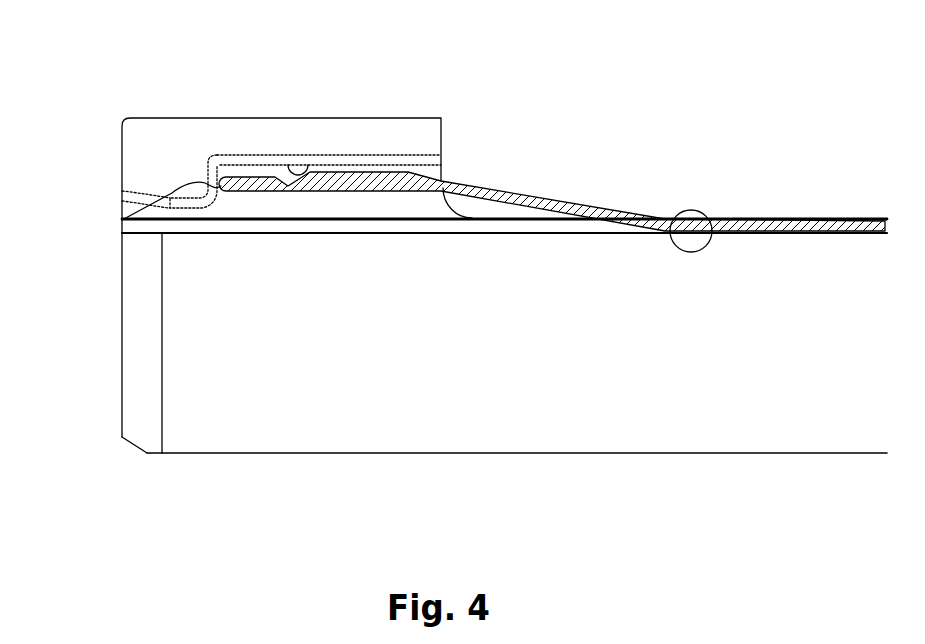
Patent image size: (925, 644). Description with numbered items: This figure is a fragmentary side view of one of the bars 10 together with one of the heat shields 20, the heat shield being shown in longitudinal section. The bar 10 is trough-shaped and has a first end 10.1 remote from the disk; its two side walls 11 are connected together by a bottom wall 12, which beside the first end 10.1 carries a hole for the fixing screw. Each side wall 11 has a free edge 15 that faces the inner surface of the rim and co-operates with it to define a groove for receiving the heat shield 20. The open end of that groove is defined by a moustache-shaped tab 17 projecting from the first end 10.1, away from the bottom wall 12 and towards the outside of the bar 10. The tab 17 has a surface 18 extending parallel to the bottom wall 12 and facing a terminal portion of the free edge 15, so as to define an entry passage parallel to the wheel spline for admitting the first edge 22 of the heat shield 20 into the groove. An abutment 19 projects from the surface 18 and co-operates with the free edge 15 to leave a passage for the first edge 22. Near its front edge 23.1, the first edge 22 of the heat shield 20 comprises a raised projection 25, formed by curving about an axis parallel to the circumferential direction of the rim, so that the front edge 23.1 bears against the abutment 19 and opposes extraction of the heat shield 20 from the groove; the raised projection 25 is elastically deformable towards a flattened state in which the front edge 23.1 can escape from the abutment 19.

The bar 10 is at (150, 94).
The first end 10.1 is at (122, 388).
The side wall 11 is at (257, 420).
The bottom wall 12 is at (655, 455).
The free edge 15 is at (618, 236).
The tab 17 is at (245, 140).
The surface 18 is at (307, 163).
The abutment 19 is at (172, 181).
The heat shield 20 is at (579, 188).
The first edge 22 is at (712, 232).
The front edge 23.1 is at (122, 220).
The raised projection 25 is at (470, 180).